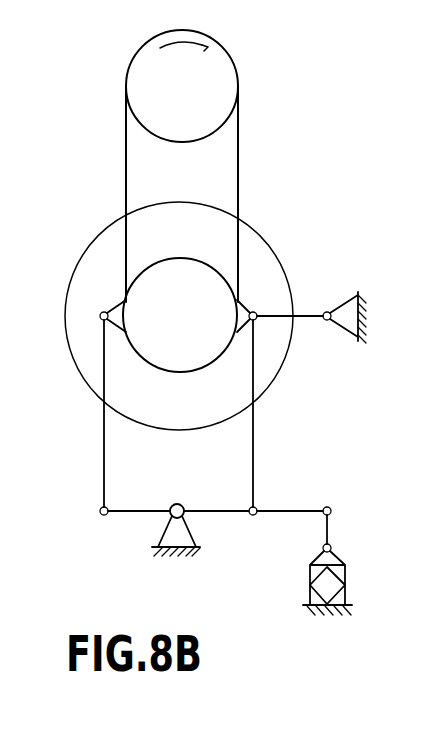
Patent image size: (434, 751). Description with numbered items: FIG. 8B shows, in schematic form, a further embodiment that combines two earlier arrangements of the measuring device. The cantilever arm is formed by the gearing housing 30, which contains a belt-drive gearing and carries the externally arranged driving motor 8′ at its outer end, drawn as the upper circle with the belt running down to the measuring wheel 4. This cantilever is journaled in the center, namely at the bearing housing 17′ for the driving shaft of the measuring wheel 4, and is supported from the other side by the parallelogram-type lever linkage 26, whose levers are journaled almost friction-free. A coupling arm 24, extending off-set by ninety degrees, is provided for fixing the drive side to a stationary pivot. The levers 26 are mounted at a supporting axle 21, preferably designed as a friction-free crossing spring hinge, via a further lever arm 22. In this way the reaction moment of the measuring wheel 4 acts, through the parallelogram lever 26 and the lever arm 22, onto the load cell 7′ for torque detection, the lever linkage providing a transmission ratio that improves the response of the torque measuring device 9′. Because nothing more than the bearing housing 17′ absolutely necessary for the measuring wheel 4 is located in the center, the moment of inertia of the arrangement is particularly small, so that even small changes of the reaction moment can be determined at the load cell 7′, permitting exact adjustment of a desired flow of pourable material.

The driving motor 8′ is at (238, 63).
The gearing housing 30 is at (238, 170).
The measuring wheel 4 is at (257, 233).
The bearing housing 17′ is at (141, 268).
The parallelogram-type lever linkage 26 is at (252, 440).
The coupling arm 24 is at (308, 312).
The lever arm 22 is at (272, 508).
The supporting axle 21 is at (186, 504).
The torque measuring device 9′ is at (330, 490).
The load cell 7′ is at (342, 564).